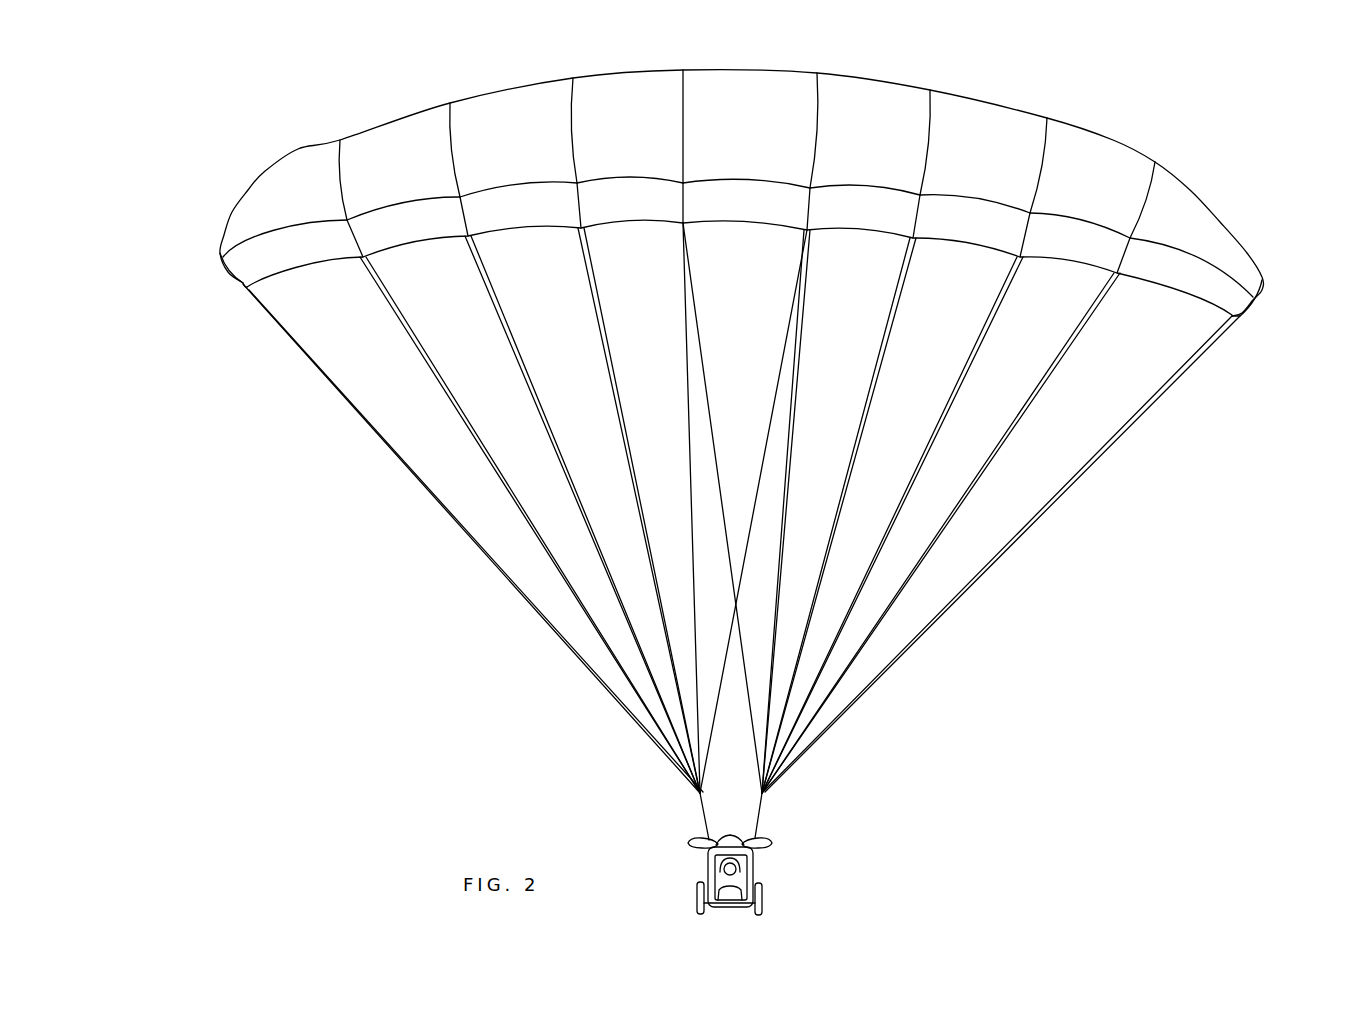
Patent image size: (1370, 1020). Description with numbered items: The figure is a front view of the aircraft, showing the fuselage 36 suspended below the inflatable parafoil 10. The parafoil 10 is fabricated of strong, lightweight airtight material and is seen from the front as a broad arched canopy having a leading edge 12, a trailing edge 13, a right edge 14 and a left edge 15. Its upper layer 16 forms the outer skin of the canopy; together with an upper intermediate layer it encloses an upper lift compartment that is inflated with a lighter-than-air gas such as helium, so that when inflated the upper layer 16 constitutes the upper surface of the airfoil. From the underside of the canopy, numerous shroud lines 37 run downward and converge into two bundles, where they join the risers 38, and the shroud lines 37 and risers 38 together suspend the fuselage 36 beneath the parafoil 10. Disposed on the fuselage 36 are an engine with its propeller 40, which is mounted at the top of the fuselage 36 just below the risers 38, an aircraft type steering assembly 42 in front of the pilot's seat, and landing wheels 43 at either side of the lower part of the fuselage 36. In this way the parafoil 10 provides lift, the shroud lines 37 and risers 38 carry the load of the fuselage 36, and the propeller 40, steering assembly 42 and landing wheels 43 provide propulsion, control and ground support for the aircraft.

The inflatable parafoil 10 is at (363, 115).
The leading edge 12 is at (633, 183).
The trailing edge 13 is at (633, 223).
The right edge 14 is at (220, 258).
The left edge 15 is at (1263, 290).
The upper layer 16 is at (880, 80).
The shroud lines 37 is at (610, 366).
The risers 38 is at (760, 807).
The propeller 40 is at (768, 838).
The fuselage 36 is at (760, 875).
The aircraft type steering assembly 42 is at (717, 863).
The landing wheels 43 is at (768, 912).